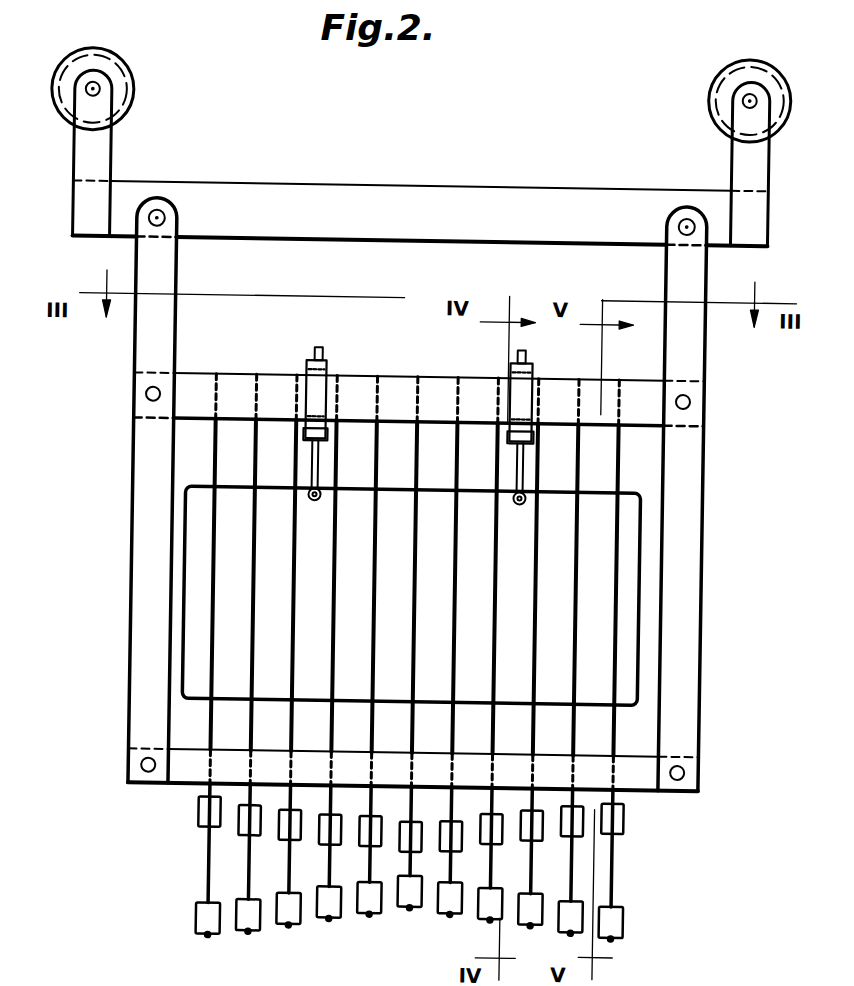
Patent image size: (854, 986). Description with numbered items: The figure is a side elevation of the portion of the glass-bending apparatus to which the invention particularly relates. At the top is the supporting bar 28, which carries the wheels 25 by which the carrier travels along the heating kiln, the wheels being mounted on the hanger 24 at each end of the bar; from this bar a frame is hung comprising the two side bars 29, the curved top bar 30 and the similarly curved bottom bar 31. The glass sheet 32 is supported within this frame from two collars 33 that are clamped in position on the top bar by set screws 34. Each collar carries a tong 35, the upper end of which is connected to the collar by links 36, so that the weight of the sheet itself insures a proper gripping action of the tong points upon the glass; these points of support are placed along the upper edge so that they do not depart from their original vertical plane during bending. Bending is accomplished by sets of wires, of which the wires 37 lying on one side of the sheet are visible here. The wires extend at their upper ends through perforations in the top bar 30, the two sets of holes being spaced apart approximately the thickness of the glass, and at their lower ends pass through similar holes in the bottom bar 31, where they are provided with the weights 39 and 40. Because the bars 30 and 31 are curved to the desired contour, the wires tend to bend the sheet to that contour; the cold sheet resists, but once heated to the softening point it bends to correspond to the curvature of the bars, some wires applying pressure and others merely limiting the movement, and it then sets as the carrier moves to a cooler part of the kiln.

The pulley strap / hanger 24 is at (199, 182).
The wheels 25 is at (128, 93).
The supporting bar 28 is at (432, 188).
The side bars 29 is at (147, 351).
The curved top bar 30 is at (188, 381).
The bottom bar 31 is at (639, 782).
The glass sheet 32 is at (633, 579).
The collars 33 is at (313, 390).
The set screws 34 is at (321, 350).
The tongs 35 is at (321, 474).
The links 36 is at (311, 442).
The wires 37 is at (216, 608).
The weights 39 is at (210, 919).
The weights 40 is at (208, 819).